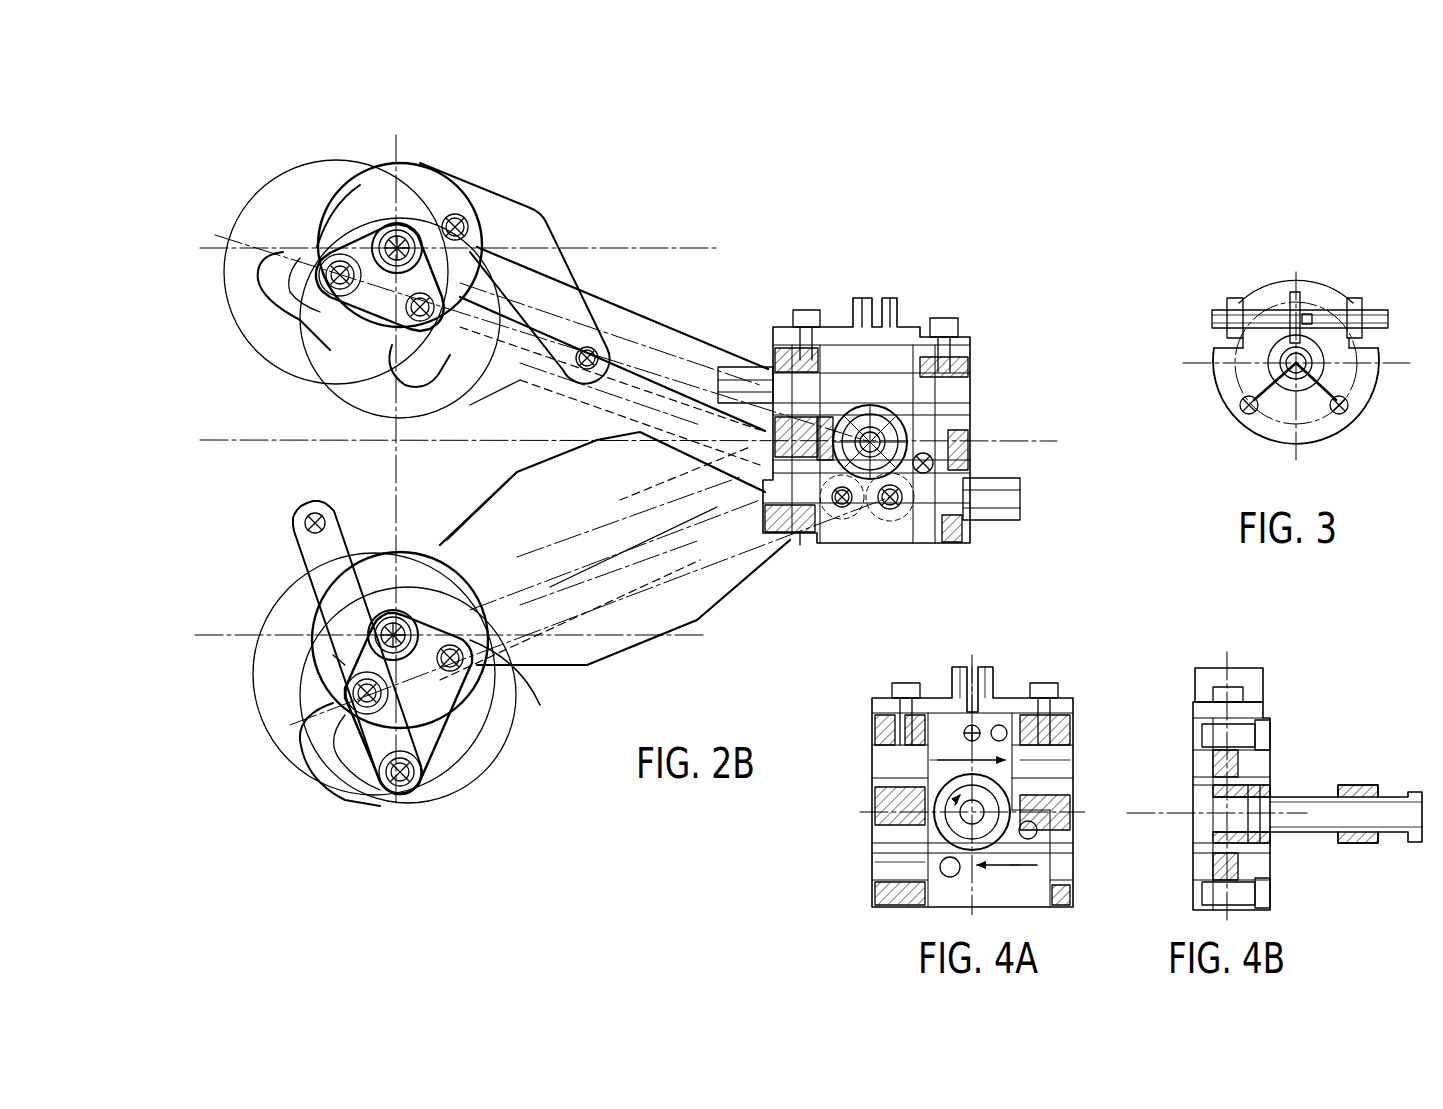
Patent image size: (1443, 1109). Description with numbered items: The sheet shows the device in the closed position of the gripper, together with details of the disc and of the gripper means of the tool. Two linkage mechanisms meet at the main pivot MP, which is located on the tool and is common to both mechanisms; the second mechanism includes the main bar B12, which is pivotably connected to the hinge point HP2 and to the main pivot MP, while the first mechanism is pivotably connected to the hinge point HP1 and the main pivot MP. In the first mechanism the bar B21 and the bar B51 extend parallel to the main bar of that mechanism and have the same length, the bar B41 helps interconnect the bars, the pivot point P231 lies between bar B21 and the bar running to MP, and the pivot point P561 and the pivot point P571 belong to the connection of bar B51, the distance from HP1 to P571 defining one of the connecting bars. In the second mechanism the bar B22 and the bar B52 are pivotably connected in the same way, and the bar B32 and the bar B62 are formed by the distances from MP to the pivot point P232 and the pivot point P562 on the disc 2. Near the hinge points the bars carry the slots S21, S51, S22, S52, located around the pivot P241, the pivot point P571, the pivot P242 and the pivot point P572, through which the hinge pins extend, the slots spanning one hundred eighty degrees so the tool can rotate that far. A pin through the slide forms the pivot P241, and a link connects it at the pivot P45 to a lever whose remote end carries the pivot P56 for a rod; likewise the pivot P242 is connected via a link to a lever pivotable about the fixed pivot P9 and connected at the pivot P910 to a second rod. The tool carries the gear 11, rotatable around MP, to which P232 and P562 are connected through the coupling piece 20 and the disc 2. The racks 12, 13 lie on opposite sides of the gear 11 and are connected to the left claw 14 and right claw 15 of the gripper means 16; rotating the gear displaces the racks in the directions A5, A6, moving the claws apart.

In FIG. 2B, the pivot point P572 is at (318, 245).
In FIG. 2B, the bar B52 is at (262, 222).
In FIG. 2B, the hinge point HP2 is at (405, 240).
In FIG. 2B, the fixed pivot P9 is at (462, 225).
In FIG. 2B, the slot S52 is at (273, 300).
In FIG. 2B, the pivot P242 is at (340, 290).
In FIG. 2B, the bar B22 is at (470, 398).
In FIG. 2B, the slot S22 is at (435, 380).
In FIG. 2B, the pivot P56 is at (318, 512).
In FIG. 2B, the pivot P910 is at (590, 348).
In FIG. 2B, the main bar B12 is at (680, 325).
In FIG. 2B, the left claw 14 is at (850, 300).
In FIG. 4A, the left claw 14 is at (958, 672).
In FIG. 2B, the right claw 15 is at (895, 300).
In FIG. 4A, the right claw 15 is at (990, 672).
In FIG. 4B, the right claw 15 is at (1248, 680).
In FIG. 2B, the main pivot MP is at (915, 410).
In FIG. 3, the main pivot MP is at (1320, 358).
In FIG. 4A, the main pivot MP is at (950, 812).
In FIG. 4B, the main pivot MP is at (1175, 818).
In FIG. 2B, the pivot point P561 is at (935, 463).
In FIG. 2B, the pivot point P562 is at (800, 535).
In FIG. 3, the pivot point P562 is at (1240, 405).
In FIG. 2B, the pivot point P231 is at (845, 520).
In FIG. 2B, the pivot point P232 is at (895, 522).
In FIG. 3, the pivot point P232 is at (1348, 405).
In FIG. 2B, the pivot point P571 is at (455, 590).
In FIG. 2B, the hinge point HP1 is at (375, 620).
In FIG. 2B, the bar B41 is at (333, 660).
In FIG. 2B, the pivot P241 is at (345, 693).
In FIG. 2B, the fifth bar B51 is at (540, 693).
In FIG. 2B, the slot S51 is at (500, 705).
In FIG. 2B, the slot S21 is at (318, 740).
In FIG. 2B, the bar B21 is at (337, 792).
In FIG. 2B, the pivot P45 is at (405, 796).
In FIG. 3, the bar B62 is at (1262, 373).
In FIG. 3, the bar B32 is at (1320, 372).
In FIG. 3, the disc 2 is at (1310, 430).
In FIG. 4A, the gripper means 16 is at (980, 660).
In FIG. 4A, the arrow A6 is at (872, 760).
In FIG. 4A, the rack 13 is at (1060, 760).
In FIG. 4B, the rack 13 is at (1215, 760).
In FIG. 4A, the gear 11 is at (1000, 795).
In FIG. 4B, the gear 11 is at (1246, 784).
In FIG. 4A, the rack 12 is at (885, 862).
In FIG. 4B, the rack 12 is at (1232, 870).
In FIG. 4A, the arrow A5 is at (1012, 870).
In FIG. 4B, the coupling piece 20 is at (1355, 786).